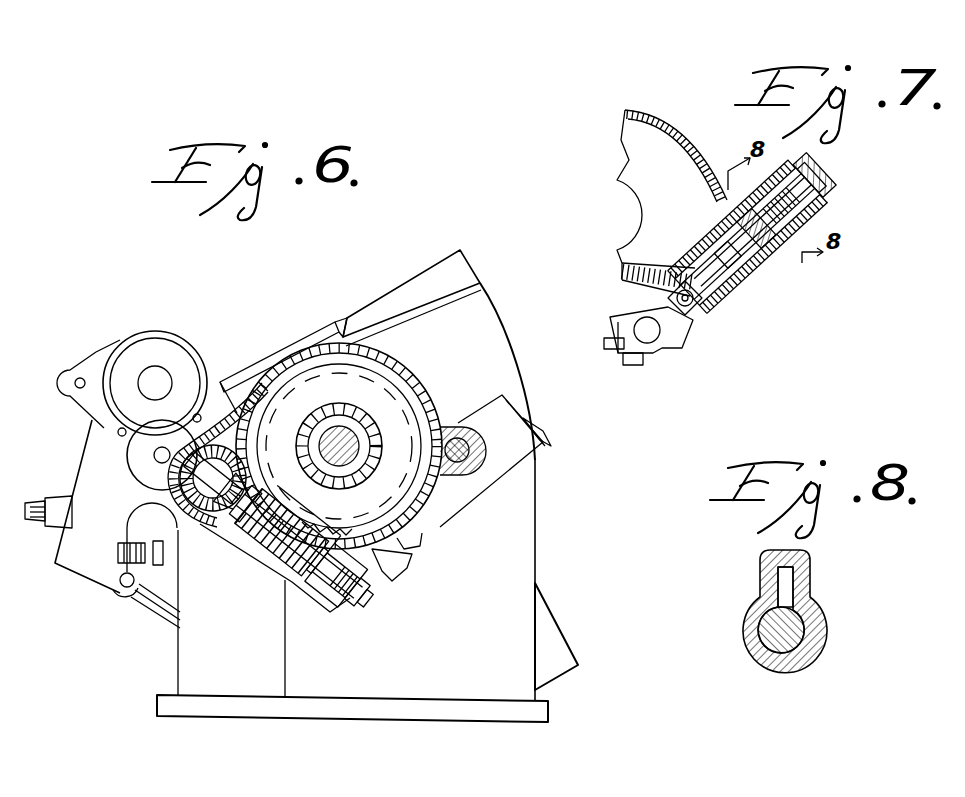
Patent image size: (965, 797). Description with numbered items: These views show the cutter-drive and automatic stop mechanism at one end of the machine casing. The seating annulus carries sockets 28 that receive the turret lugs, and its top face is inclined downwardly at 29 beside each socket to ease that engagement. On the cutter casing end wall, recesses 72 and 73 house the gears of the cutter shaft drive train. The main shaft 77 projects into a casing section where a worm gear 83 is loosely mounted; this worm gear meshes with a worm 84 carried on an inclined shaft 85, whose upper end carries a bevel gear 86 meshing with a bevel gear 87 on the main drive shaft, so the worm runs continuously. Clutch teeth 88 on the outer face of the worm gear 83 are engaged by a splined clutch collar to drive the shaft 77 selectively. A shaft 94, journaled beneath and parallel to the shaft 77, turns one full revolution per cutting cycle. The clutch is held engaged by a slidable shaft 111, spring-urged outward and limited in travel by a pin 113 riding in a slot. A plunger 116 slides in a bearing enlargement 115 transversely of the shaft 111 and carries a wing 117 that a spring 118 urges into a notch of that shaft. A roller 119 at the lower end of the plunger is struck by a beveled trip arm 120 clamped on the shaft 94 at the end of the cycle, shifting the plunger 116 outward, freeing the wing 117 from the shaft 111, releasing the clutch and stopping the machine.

In FIG. 6, the sockets 28 is at (342, 322).
In FIG. 6, the inclined top face portion 29 is at (300, 350).
In FIG. 6, the recess 72 is at (145, 454).
In FIG. 6, the recess 73 is at (180, 358).
In FIG. 6, the main shaft 77 is at (352, 440).
In FIG. 6, the worm gear 83 is at (330, 526).
In FIG. 6, the worm 84 is at (270, 555).
In FIG. 6, the inclined shaft 85 is at (322, 588).
In FIG. 6, the bevel gear 86 is at (222, 520).
In FIG. 6, the bevel gear 87 is at (176, 494).
In FIG. 6, the clutch teeth 88 is at (322, 428).
In FIG. 6, the shaft 94 is at (375, 575).
In FIG. 6, the shaft 111 is at (468, 476).
In FIG. 7, the shaft 111 is at (728, 220).
In FIG. 6, the pin 113 is at (459, 422).
In FIG. 6, the bearing enlargement 115 is at (500, 466).
In FIG. 8, the bearing enlargement 115 is at (812, 608).
In FIG. 6, the plunger 116 is at (414, 546).
In FIG. 7, the plunger 116 is at (760, 255).
In FIG. 8, the plunger 116 is at (800, 638).
In FIG. 7, the wing 117 is at (735, 206).
In FIG. 8, the wing 117 is at (785, 587).
In FIG. 7, the spring 118 is at (828, 205).
In FIG. 7, the roller 119 is at (696, 307).
In FIG. 6, the trip arm 120 is at (404, 567).
In FIG. 7, the trip arm 120 is at (668, 340).